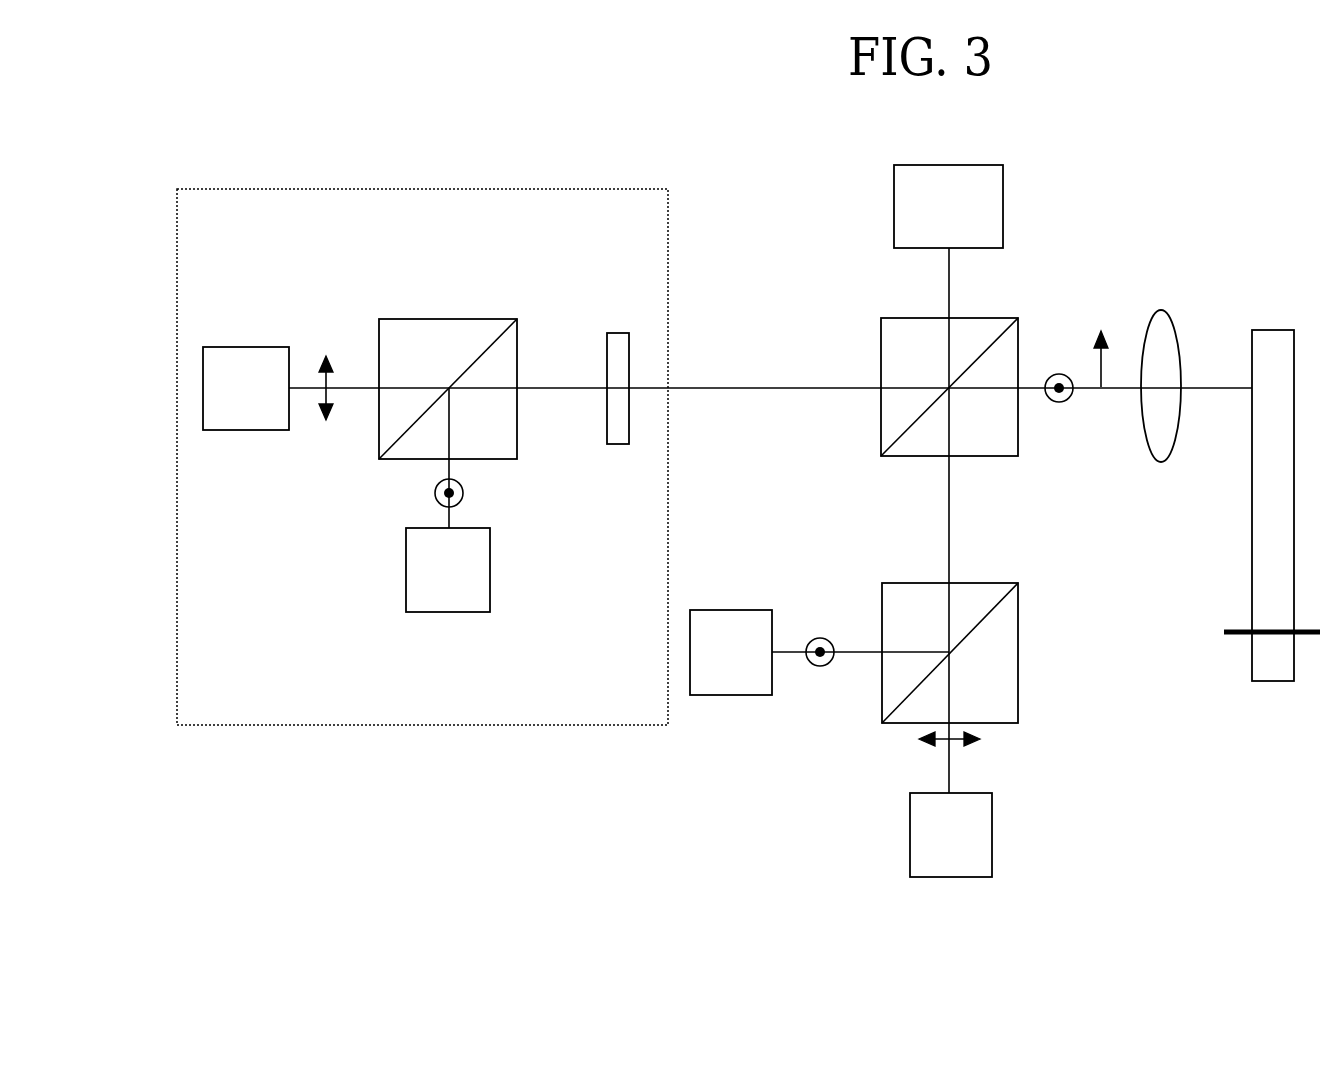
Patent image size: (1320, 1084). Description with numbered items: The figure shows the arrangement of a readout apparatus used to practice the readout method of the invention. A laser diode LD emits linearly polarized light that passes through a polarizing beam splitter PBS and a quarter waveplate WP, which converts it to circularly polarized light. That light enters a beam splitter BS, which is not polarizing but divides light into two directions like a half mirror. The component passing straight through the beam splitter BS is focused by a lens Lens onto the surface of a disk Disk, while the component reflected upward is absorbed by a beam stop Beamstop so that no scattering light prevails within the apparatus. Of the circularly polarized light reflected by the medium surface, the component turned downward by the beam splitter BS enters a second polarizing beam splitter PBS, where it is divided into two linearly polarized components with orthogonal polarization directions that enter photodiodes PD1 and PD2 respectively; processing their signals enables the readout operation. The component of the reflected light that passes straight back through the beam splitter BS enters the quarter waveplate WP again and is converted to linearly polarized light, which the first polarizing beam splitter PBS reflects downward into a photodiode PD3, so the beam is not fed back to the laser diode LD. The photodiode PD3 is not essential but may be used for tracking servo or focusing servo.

The laser diode LD is at (246, 388).
The polarizing beam splitter PBS is at (696, 506).
The photodiode PD3 is at (448, 570).
The quarter waveplate WP is at (615, 371).
The beam splitter BS is at (927, 384).
The beam stop Beamstop is at (948, 206).
The lens Lens is at (1165, 364).
The disk Disk is at (1272, 530).
The photodiode PD1 is at (731, 652).
The photodiode PD2 is at (951, 835).